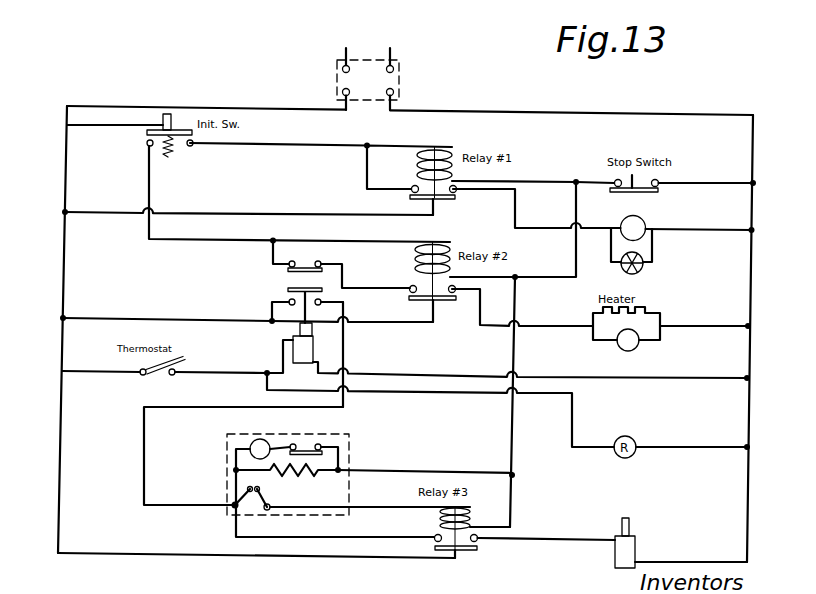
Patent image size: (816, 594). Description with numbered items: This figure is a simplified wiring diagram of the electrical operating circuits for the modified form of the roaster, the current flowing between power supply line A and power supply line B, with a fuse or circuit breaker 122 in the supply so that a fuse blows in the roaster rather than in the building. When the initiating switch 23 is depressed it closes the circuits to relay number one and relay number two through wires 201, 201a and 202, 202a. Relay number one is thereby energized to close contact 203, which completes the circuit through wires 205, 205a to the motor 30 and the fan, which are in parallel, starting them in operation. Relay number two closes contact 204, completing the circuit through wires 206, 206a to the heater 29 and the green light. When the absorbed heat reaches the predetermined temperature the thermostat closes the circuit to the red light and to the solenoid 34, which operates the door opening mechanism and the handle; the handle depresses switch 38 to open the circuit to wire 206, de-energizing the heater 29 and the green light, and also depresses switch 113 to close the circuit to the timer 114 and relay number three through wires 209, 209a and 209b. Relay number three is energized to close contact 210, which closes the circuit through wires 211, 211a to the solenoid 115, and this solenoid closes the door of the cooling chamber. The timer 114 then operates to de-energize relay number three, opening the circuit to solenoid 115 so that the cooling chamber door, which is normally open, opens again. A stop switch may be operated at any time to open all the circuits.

The power supply line A is at (66, 257).
The power supply line B is at (755, 153).
The fuse or circuit breaker 122 is at (400, 63).
The initiating switch 23 is at (146, 141).
The wire 201 is at (251, 149).
The contact 203 is at (445, 205).
The wire 205 is at (247, 203).
The wire 202 is at (299, 206).
The wire 202a is at (514, 242).
The contact 204 is at (434, 302).
The switch 38 is at (287, 270).
The switch 113 is at (285, 288).
The wire 206 is at (246, 308).
The wire 209 is at (346, 350).
The solenoid 34 is at (297, 330).
The wire 201a is at (533, 186).
The motor 30 is at (631, 235).
The wire 205a is at (700, 220).
The wire 206a is at (601, 323).
The heater 29 is at (661, 312).
The wire 209b is at (512, 500).
The timer 114 is at (340, 431).
The wire 209a is at (422, 510).
The contact 210 is at (478, 547).
The wire 211 is at (270, 558).
The wire 211a is at (547, 528).
The solenoid 115 is at (636, 543).